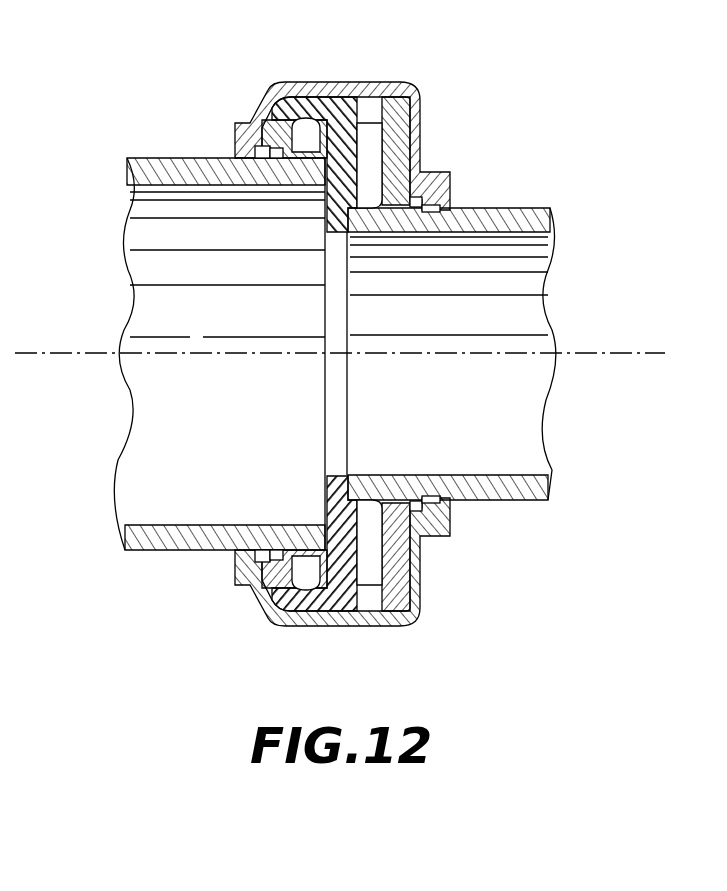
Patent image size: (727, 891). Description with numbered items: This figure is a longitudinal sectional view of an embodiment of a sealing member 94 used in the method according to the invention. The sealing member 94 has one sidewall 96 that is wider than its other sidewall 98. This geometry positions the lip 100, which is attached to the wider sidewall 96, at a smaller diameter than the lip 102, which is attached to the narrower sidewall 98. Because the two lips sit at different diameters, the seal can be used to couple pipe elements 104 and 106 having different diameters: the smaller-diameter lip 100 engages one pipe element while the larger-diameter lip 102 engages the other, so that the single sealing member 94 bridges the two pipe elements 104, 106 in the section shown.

The sealing member 94 is at (345, 115).
The sidewall 96 is at (420, 142).
The sidewall 98 is at (280, 110).
The lip 100 is at (377, 502).
The lip 102 is at (298, 103).
The pipe element 104 is at (143, 550).
The pipe element 106 is at (508, 497).